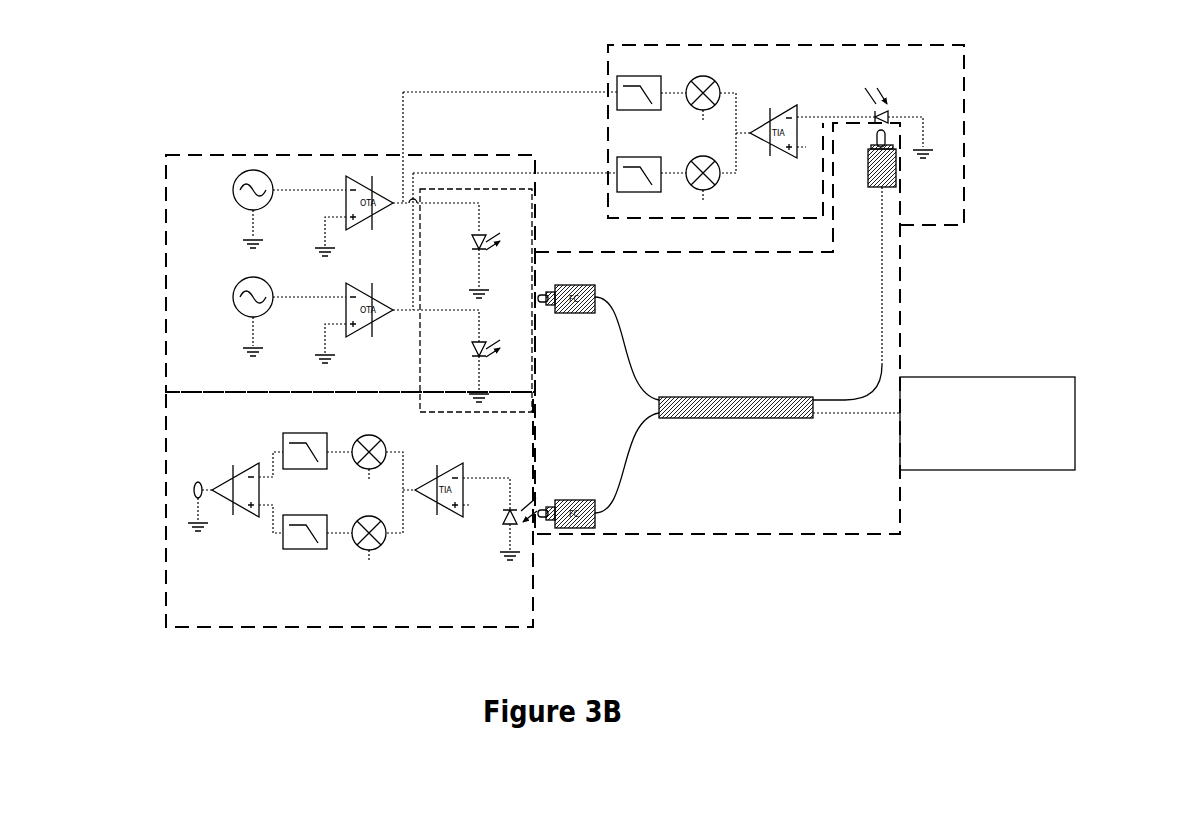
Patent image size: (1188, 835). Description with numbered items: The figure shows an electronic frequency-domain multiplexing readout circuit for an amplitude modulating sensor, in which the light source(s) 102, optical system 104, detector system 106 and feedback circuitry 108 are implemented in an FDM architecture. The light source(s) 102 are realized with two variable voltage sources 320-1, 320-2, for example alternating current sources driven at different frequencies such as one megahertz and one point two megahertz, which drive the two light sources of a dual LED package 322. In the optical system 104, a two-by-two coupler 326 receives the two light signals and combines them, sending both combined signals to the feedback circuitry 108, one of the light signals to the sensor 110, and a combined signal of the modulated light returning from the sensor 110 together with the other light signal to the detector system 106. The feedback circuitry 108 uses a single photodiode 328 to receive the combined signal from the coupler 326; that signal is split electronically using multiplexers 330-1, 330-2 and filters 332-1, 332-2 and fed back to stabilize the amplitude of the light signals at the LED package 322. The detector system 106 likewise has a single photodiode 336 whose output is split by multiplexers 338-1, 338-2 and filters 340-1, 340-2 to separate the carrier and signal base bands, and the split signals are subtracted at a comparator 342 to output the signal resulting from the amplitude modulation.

The light source(s) 102 is at (165, 242).
The optical system 104 is at (843, 535).
The detector system 106 is at (165, 482).
The feedback circuitry 108 is at (965, 95).
The sensor 110 is at (1078, 408).
The variable voltage source 320-1 is at (262, 172).
The variable voltage source 320-2 is at (238, 313).
The dual LED package 322 is at (486, 188).
The 2×2 coupler 326 is at (730, 415).
The photodiode 328 is at (885, 100).
The multiplexer 330-1 is at (706, 76).
The multiplexer 330-2 is at (722, 178).
The filter 332-1 is at (630, 75).
The filter 332-2 is at (630, 194).
The photodiode 336 is at (537, 553).
The multiplexer 338-1 is at (362, 438).
The multiplexer 338-2 is at (378, 547).
The filter 340-1 is at (286, 437).
The filter 340-2 is at (297, 545).
The comparator 342 is at (255, 512).